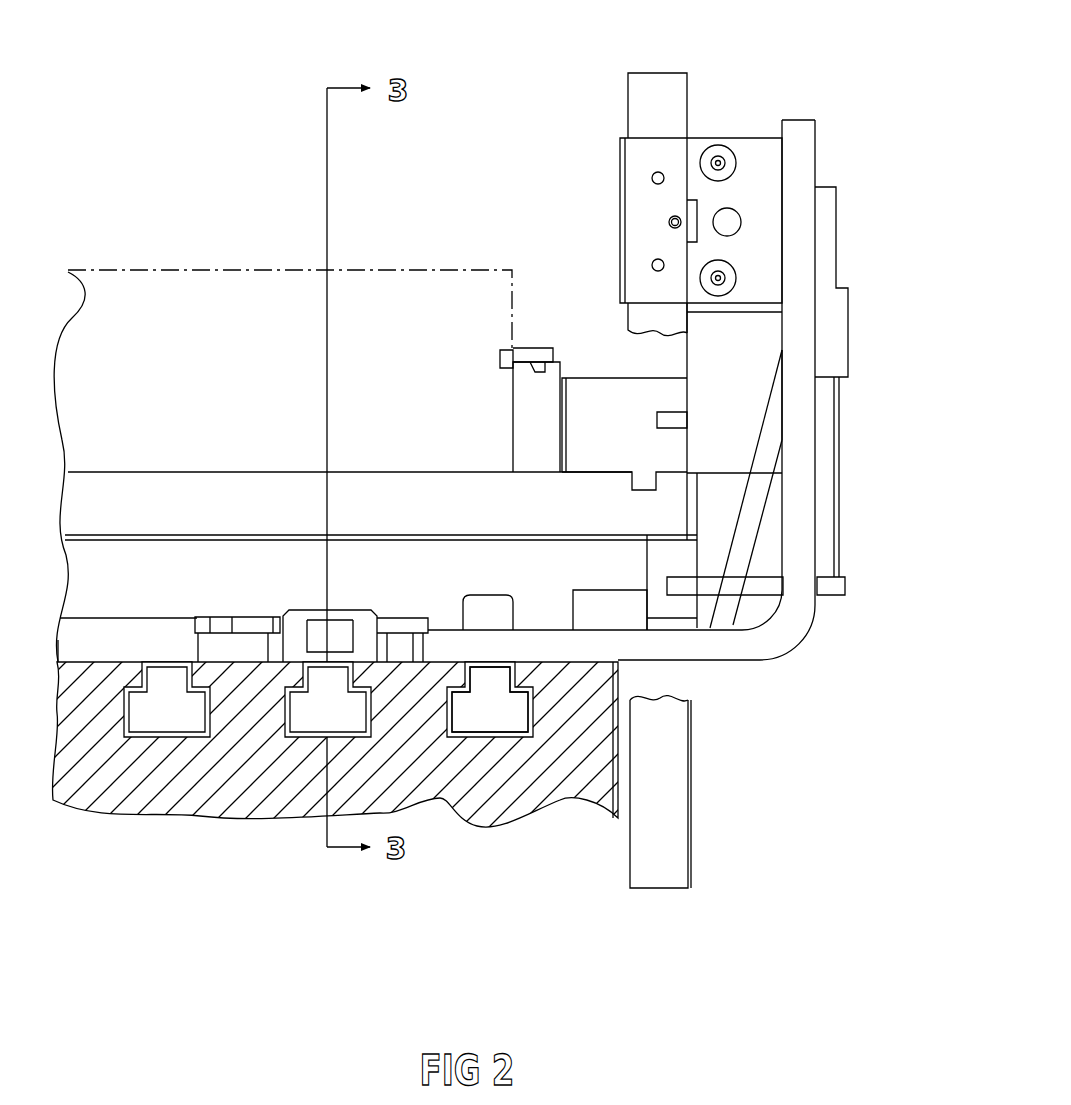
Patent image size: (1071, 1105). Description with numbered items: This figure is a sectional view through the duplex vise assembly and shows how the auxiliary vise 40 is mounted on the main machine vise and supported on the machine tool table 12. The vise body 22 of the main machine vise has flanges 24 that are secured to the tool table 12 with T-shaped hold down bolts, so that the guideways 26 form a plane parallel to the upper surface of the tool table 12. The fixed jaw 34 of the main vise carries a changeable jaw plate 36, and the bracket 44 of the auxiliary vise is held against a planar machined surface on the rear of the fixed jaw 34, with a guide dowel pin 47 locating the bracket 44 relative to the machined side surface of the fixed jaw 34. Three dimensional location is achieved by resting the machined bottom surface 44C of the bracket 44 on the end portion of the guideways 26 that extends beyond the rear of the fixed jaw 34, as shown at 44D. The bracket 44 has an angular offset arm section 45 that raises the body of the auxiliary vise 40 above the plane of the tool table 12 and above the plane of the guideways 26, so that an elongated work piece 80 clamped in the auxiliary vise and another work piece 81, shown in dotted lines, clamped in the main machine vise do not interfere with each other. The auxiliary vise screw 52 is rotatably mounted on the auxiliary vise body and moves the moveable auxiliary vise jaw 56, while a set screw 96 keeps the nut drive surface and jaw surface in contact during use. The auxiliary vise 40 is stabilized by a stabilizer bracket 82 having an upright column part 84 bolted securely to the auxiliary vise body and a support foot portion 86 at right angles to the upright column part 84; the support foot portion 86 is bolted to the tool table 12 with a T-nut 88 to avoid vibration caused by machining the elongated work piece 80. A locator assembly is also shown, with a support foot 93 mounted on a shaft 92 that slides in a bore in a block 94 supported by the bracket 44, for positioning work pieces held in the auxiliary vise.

The machine tool table 12 is at (193, 793).
The vise body 22 is at (125, 565).
The flanges 24 is at (293, 612).
The guideways 26 is at (222, 473).
The fixed jaw 34 is at (593, 407).
The changeable jaw plate 36 is at (518, 425).
The auxiliary vise 40 is at (700, 130).
The bracket 44 is at (715, 485).
The machined bottom surface 44C is at (730, 473).
The bracket resting location 44D is at (690, 470).
The angular offset arm section 45 is at (703, 362).
The guide dowel pin 47 is at (675, 425).
The auxiliary vise screw 52 is at (727, 220).
The moveable auxiliary vise jaw 56 is at (634, 182).
The elongated work piece 80 is at (640, 110).
The work piece 81 is at (262, 270).
The stabilizer bracket 82 is at (772, 668).
The upright column part 84 is at (805, 473).
The support foot portion 86 is at (552, 628).
The T-nut 88 is at (490, 708).
The shaft 92 is at (827, 244).
The support foot 93 is at (708, 583).
The block 94 is at (838, 380).
The set screw 96 is at (668, 220).